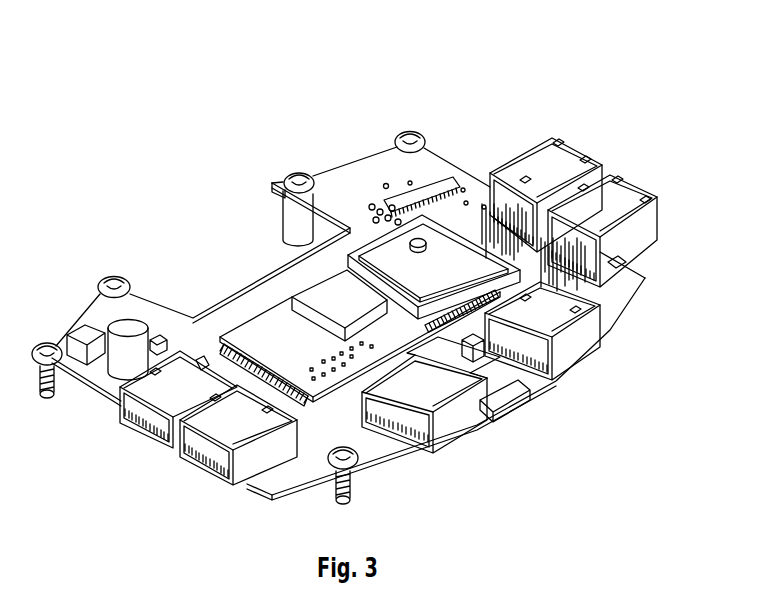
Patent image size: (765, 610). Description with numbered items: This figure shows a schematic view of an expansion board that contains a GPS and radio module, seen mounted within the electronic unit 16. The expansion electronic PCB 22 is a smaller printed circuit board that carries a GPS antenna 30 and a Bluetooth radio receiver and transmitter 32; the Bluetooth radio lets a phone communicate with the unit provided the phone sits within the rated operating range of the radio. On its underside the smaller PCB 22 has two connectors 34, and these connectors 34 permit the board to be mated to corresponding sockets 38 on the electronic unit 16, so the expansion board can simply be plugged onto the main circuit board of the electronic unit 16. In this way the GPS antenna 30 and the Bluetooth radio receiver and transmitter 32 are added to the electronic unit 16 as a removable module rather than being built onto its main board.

The electronic unit 16 is at (318, 141).
The expansion electronic PCB 22 is at (250, 301).
The GPS antenna 30 is at (447, 233).
The Bluetooth radio receiver and transmitter 32 is at (373, 317).
The connectors 34 is at (224, 342).
The sockets 38 is at (308, 398).